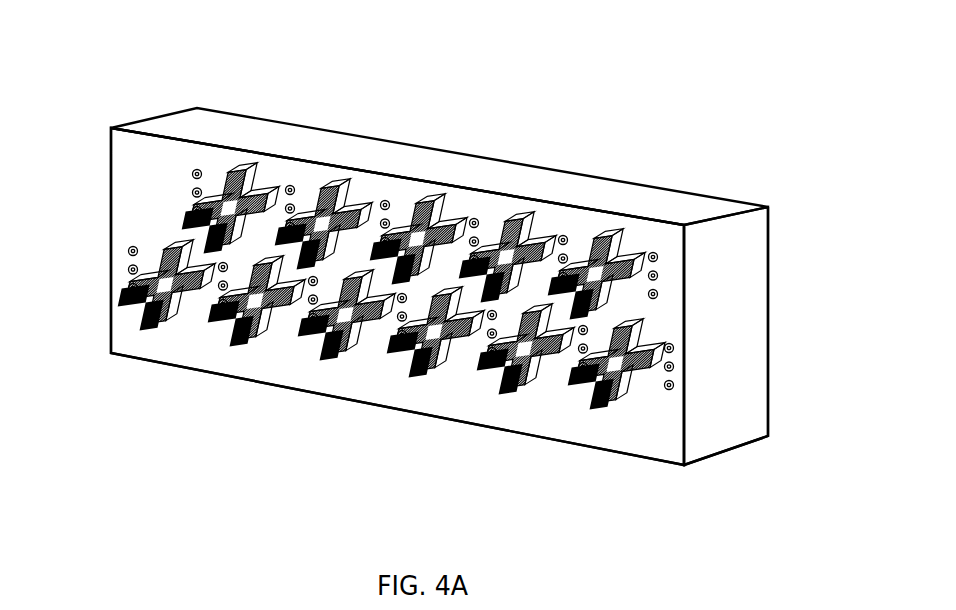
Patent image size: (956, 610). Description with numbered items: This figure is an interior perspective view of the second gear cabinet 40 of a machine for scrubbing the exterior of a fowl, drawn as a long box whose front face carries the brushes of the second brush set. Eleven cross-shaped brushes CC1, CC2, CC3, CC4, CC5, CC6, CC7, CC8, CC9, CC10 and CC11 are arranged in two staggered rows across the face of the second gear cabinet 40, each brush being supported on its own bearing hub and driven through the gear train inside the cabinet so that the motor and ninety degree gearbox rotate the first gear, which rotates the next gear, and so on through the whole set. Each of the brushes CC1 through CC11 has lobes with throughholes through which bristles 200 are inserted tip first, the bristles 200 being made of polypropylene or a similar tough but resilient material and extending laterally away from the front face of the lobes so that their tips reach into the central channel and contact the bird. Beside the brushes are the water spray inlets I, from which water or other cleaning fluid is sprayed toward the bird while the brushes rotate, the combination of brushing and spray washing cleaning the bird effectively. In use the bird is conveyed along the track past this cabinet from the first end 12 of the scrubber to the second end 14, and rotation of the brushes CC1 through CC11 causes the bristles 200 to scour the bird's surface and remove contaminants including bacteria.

The second gear cabinet 40 is at (725, 112).
The first end 12 is at (120, 337).
The second end 14 is at (673, 400).
The bristles 200 is at (132, 285).
The water spray inlets I is at (222, 265).
The brush CC1 is at (645, 390).
The brush CC2 is at (592, 233).
The brush CC3 is at (518, 373).
The brush CC4 is at (500, 220).
The brush CC5 is at (468, 360).
The brush CC6 is at (412, 205).
The brush CC7 is at (378, 332).
The brush CC8 is at (316, 185).
The brush CC9 is at (290, 326).
The brush CC10 is at (214, 178).
The brush CC11 is at (199, 312).